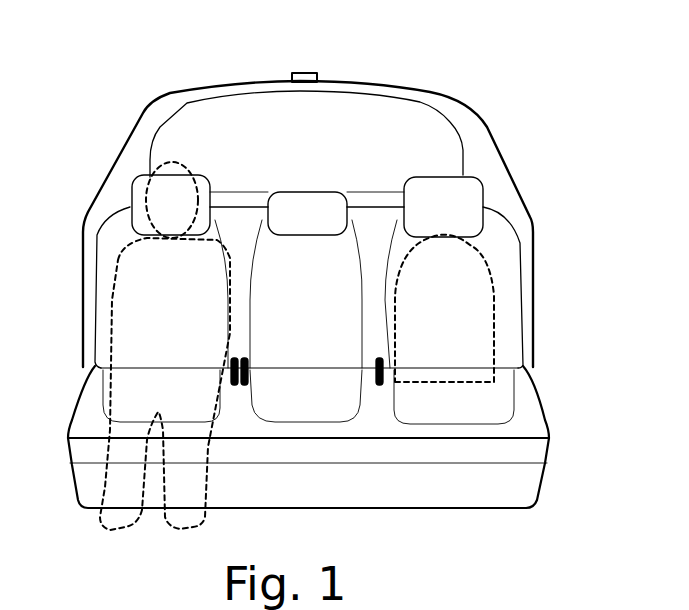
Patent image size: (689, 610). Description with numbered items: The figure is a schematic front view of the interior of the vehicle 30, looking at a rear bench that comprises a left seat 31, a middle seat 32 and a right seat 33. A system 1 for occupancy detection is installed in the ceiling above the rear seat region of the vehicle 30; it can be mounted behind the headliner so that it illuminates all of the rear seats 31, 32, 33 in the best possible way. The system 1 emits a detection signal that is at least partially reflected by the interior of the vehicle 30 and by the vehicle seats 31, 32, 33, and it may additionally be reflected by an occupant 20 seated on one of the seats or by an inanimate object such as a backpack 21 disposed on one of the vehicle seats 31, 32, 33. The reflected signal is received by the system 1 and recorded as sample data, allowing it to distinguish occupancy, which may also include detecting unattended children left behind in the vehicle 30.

The system for occupancy detection 1 is at (303, 72).
The occupant 20 is at (117, 262).
The backpack 21 is at (487, 272).
The vehicle 30 is at (537, 133).
The left seat 31 is at (181, 309).
The middle seat 32 is at (320, 309).
The right seat 33 is at (454, 309).